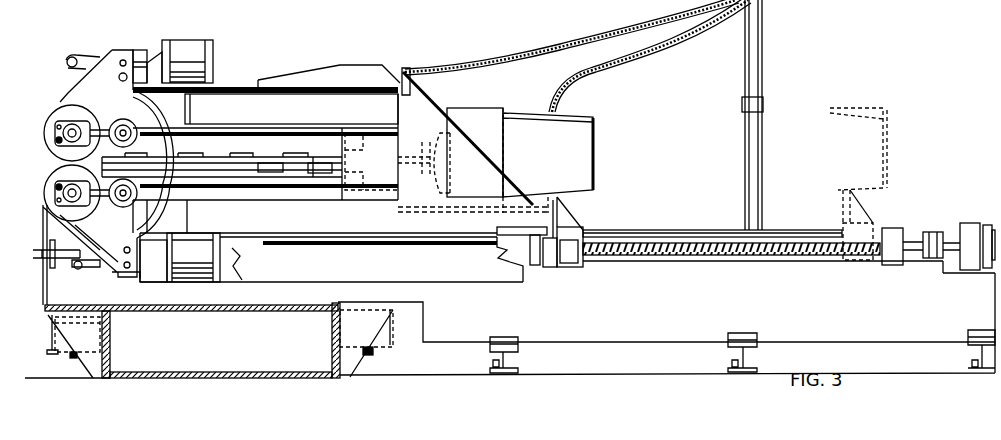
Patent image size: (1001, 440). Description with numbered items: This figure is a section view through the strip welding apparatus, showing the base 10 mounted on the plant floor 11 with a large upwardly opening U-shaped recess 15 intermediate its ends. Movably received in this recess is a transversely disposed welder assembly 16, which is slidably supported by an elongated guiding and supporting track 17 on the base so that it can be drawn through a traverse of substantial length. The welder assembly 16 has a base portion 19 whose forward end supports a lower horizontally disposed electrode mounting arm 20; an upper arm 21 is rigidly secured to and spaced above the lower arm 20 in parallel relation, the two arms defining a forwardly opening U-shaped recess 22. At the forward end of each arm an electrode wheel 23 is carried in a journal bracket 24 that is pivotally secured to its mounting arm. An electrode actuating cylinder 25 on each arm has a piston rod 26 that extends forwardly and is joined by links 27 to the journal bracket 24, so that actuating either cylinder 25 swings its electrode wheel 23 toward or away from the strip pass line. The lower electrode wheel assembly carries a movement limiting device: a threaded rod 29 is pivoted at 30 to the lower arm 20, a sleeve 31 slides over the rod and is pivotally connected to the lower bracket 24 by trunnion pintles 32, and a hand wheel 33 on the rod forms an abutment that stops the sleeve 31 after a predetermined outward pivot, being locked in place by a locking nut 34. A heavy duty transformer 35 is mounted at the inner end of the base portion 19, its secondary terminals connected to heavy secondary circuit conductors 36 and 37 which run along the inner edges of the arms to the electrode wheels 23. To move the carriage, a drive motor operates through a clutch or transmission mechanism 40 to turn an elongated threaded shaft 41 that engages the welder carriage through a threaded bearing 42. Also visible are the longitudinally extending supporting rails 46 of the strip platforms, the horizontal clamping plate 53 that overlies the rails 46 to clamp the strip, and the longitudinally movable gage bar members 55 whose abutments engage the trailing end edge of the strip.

The base 10 is at (110, 357).
The plant floor 11 is at (50, 380).
The U-shaped recess 15 is at (48, 300).
The welder assembly 16 is at (250, 118).
The guiding and supporting track 17 is at (780, 233).
The base portion 19 is at (513, 217).
The lower electrode mounting arm 20 is at (338, 218).
The upper arm 21 is at (257, 125).
The U-shaped recess 22 is at (262, 147).
The electrode wheel 23 is at (50, 128).
The journal bracket 24 is at (82, 90).
The electrode actuating cylinder 25 is at (186, 52).
The piston rod 26 is at (143, 60).
The links 27 is at (85, 60).
The threaded rod 29 is at (47, 243).
The pivot 30 is at (190, 210).
The sleeve 31 is at (72, 262).
The trunnion pintles 32 is at (127, 245).
The hand wheel 33 is at (88, 232).
The locking nut 34 is at (33, 255).
The transformer 35 is at (590, 133).
The secondary circuit conductor 36 is at (210, 137).
The secondary circuit conductor 37 is at (350, 200).
The clutch or transmission mechanism 40 is at (983, 225).
The threaded shaft 41 is at (760, 252).
The threaded bearing 42 is at (567, 257).
The supporting rails 46 is at (320, 167).
The clamping plate 53 is at (285, 156).
The gage bar members 55 is at (250, 160).